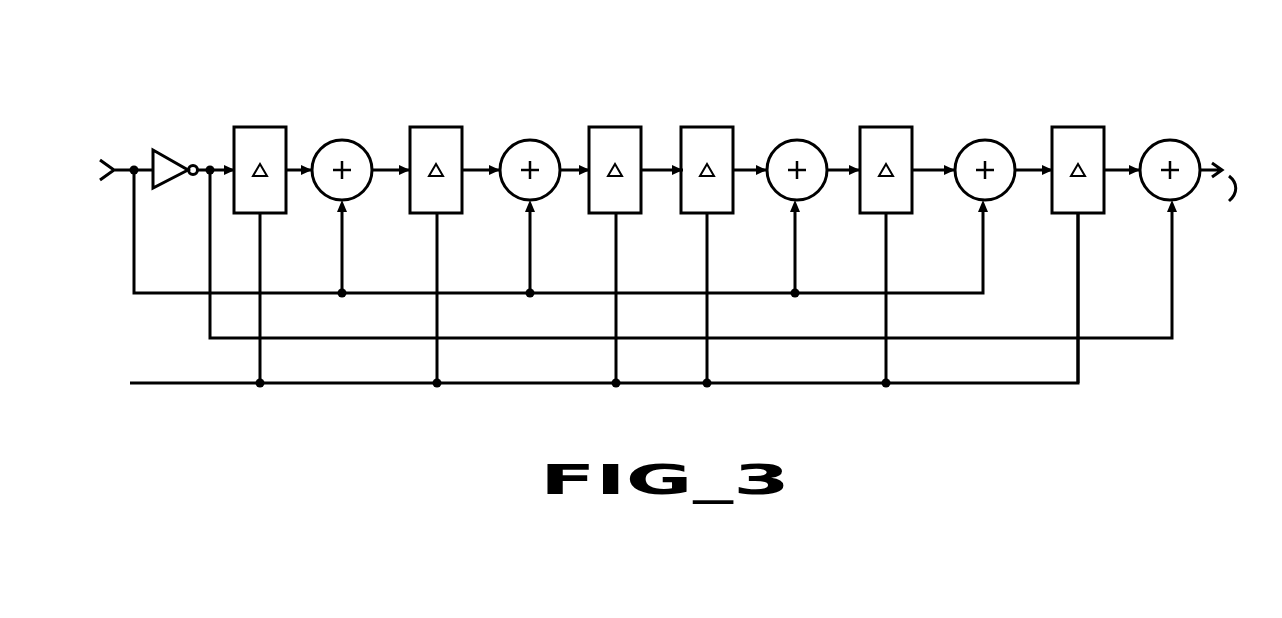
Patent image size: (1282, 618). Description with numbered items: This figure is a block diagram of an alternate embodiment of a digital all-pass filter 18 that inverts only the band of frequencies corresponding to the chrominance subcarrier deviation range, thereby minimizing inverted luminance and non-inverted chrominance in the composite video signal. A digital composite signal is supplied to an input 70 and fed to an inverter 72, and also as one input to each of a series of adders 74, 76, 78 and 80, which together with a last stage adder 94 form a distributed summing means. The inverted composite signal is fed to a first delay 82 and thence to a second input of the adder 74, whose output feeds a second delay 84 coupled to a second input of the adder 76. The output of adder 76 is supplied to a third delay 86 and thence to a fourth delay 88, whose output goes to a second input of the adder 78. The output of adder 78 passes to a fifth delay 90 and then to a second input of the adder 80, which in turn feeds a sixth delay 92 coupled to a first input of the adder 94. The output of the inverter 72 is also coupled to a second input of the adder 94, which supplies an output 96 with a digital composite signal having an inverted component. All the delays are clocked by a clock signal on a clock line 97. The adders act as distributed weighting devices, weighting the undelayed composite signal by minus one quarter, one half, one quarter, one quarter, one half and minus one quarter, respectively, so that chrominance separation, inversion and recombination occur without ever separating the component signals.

The digital all-pass filter 18 is at (668, 101).
The input 70 is at (120, 172).
The inverter 72 is at (170, 152).
The adder 74 is at (348, 140).
The adder 76 is at (536, 140).
The adder 78 is at (798, 140).
The adder 80 is at (990, 140).
The first delay 82 is at (268, 127).
The second delay 84 is at (440, 127).
The third delay 86 is at (617, 127).
The fourth delay 88 is at (708, 127).
The fifth delay 90 is at (886, 127).
The sixth delay 92 is at (1080, 127).
The last stage adder 94 is at (1169, 140).
The output 96 is at (1206, 166).
The clock line 97 is at (140, 383).